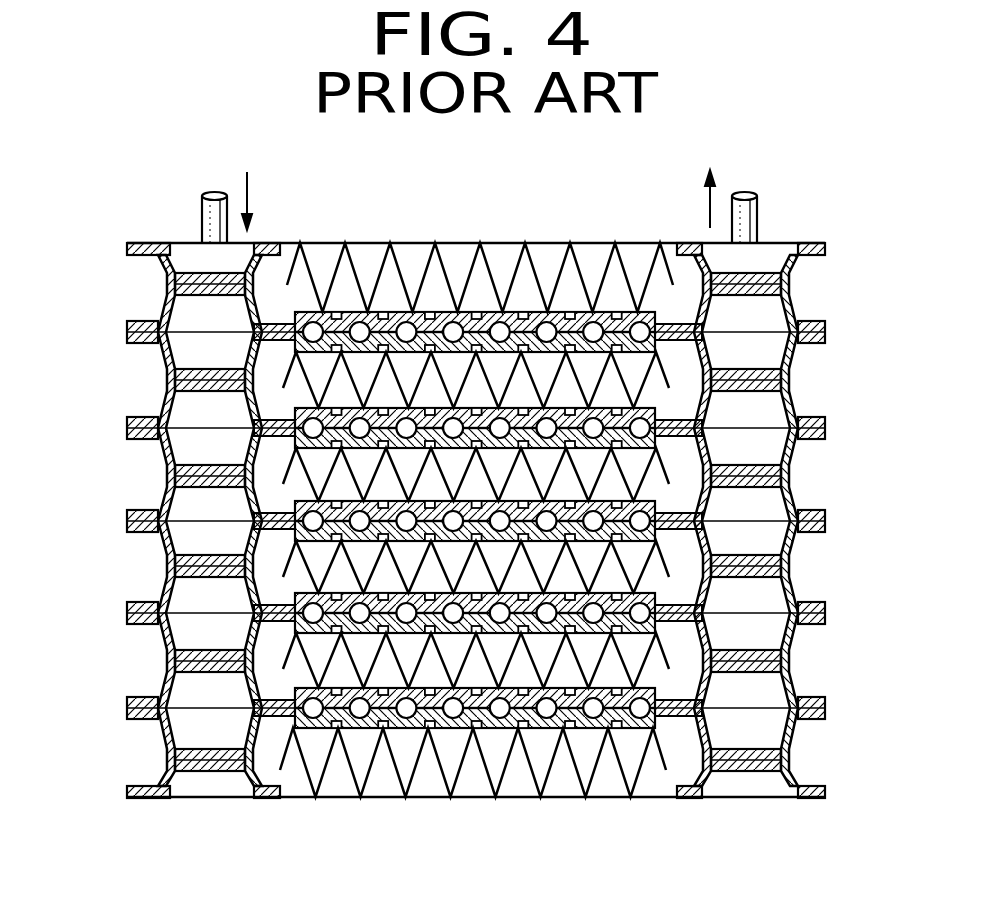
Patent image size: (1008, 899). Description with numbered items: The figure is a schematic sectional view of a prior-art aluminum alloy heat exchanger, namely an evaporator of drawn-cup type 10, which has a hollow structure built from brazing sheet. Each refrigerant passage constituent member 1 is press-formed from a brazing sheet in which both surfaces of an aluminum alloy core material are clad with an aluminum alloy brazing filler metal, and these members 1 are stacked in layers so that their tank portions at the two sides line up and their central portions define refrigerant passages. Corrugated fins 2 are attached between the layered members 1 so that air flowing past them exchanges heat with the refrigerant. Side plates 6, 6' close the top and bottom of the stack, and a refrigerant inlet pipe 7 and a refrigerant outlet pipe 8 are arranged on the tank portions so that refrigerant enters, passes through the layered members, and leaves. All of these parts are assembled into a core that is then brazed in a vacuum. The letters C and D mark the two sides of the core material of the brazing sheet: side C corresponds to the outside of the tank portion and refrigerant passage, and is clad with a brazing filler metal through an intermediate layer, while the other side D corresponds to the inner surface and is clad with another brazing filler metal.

The refrigerant passage constituent member 1 is at (130, 419).
The corrugated fin 2 is at (621, 266).
The side plate 6 is at (476, 220).
The side plate 6' is at (476, 821).
The refrigerant inlet pipe 7 is at (205, 216).
The refrigerant outlet pipe 8 is at (752, 216).
The evaporator of drawn-cup type 10 is at (540, 208).
The side of the core material C is at (802, 370).
The side of the core material D is at (764, 346).